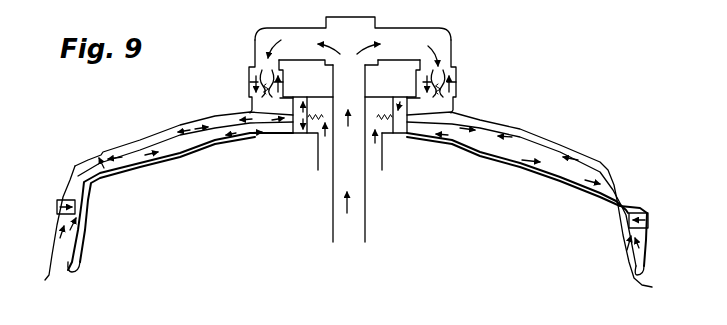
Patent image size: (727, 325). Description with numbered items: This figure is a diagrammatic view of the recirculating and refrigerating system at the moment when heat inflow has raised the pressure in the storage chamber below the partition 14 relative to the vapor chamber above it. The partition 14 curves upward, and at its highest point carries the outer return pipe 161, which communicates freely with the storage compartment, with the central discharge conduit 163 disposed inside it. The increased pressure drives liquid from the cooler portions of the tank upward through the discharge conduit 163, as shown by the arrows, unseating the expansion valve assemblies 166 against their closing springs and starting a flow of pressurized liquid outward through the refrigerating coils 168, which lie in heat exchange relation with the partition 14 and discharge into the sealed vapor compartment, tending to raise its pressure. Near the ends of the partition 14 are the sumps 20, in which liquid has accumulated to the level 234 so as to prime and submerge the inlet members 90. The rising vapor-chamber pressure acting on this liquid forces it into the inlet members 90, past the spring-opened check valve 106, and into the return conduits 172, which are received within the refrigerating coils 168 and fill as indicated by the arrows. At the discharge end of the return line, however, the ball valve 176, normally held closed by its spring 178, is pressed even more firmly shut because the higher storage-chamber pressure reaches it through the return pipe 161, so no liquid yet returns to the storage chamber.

The partition 14 is at (274, 137).
The sumps 20 is at (91, 210).
The inlet members 90 is at (62, 250).
The check valve 106 is at (643, 213).
The return pipe 161 is at (385, 158).
The discharge conduit 163 is at (366, 209).
The expansion valve assemblies 166 is at (260, 80).
The refrigerating coils 168 is at (185, 136).
The return conduits 172 is at (183, 143).
The ball valve 176 is at (392, 118).
The spring 178 is at (319, 96).
The liquid level 234 is at (72, 182).